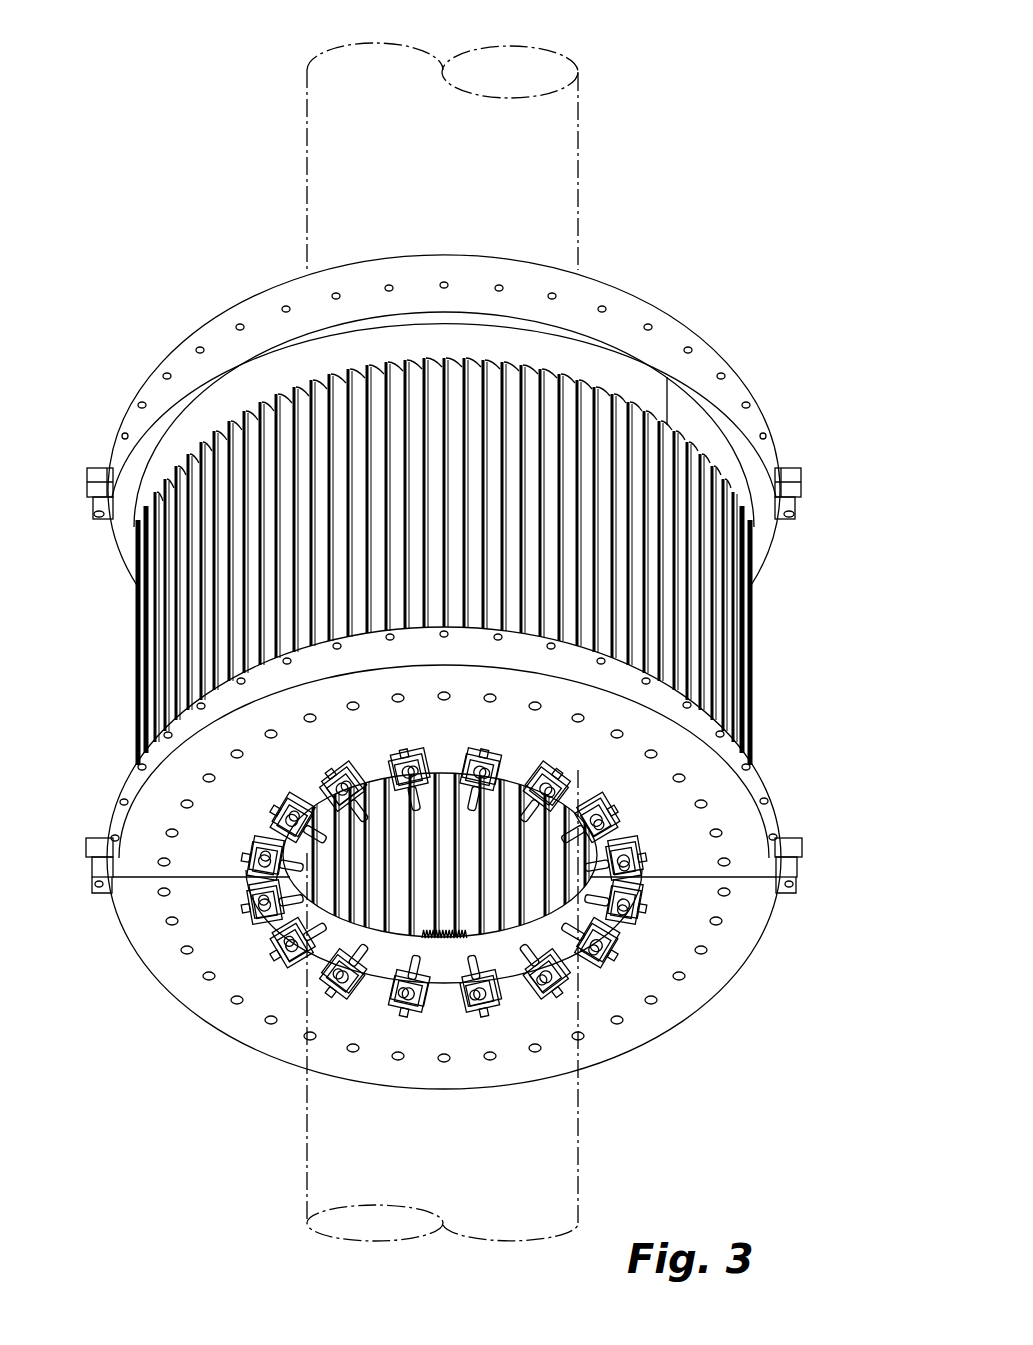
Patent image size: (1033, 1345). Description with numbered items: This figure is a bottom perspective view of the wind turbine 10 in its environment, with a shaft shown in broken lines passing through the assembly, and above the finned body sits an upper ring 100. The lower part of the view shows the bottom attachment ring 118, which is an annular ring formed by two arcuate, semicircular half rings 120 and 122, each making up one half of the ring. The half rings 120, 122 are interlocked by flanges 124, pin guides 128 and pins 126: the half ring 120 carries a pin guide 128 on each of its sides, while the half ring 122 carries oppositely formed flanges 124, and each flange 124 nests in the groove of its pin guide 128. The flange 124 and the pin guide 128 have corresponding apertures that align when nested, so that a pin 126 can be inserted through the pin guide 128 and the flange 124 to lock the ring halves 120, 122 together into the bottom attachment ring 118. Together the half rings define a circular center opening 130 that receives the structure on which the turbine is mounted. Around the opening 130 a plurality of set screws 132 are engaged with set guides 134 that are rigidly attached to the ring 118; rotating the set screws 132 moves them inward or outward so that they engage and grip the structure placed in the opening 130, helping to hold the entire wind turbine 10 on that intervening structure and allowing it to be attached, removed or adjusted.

The wind turbine 10 is at (806, 583).
The upper flange ring 100 is at (679, 319).
The bottom attachment ring 118 is at (722, 980).
The half ring 120 is at (748, 932).
The half ring 122 is at (147, 805).
The flange 124 is at (86, 857).
The pin 126 is at (98, 887).
The pin guide 128 is at (85, 872).
The center opening 130 is at (508, 958).
The set screw 132 is at (489, 754).
The set guide 134 is at (488, 757).